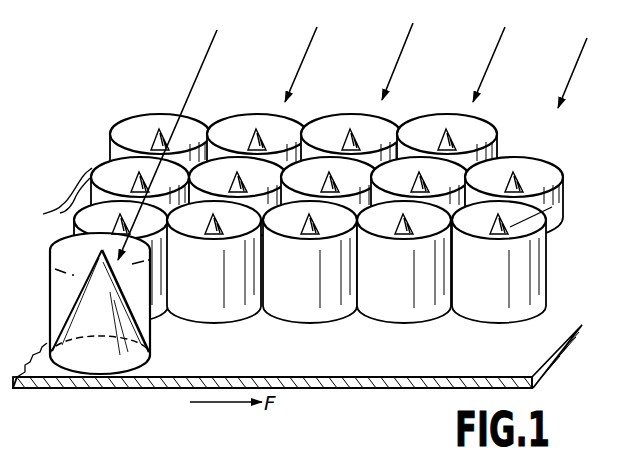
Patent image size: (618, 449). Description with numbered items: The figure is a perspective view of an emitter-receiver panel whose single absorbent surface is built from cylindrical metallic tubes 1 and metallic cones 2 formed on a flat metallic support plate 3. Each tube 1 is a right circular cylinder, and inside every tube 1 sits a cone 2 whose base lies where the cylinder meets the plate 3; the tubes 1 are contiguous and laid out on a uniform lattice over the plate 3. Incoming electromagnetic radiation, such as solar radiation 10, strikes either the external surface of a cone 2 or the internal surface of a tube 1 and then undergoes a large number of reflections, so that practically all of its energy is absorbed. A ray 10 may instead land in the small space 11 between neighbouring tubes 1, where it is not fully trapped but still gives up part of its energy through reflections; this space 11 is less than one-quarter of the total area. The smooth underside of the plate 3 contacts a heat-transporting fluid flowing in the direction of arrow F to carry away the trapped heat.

The cylindrical metallic tube 1 is at (70, 242).
The metallic cone 2 is at (136, 315).
The metallic support plate 3 is at (303, 376).
The solar radiation 10 is at (290, 79).
The space between cylindrical tubes 11 is at (380, 163).